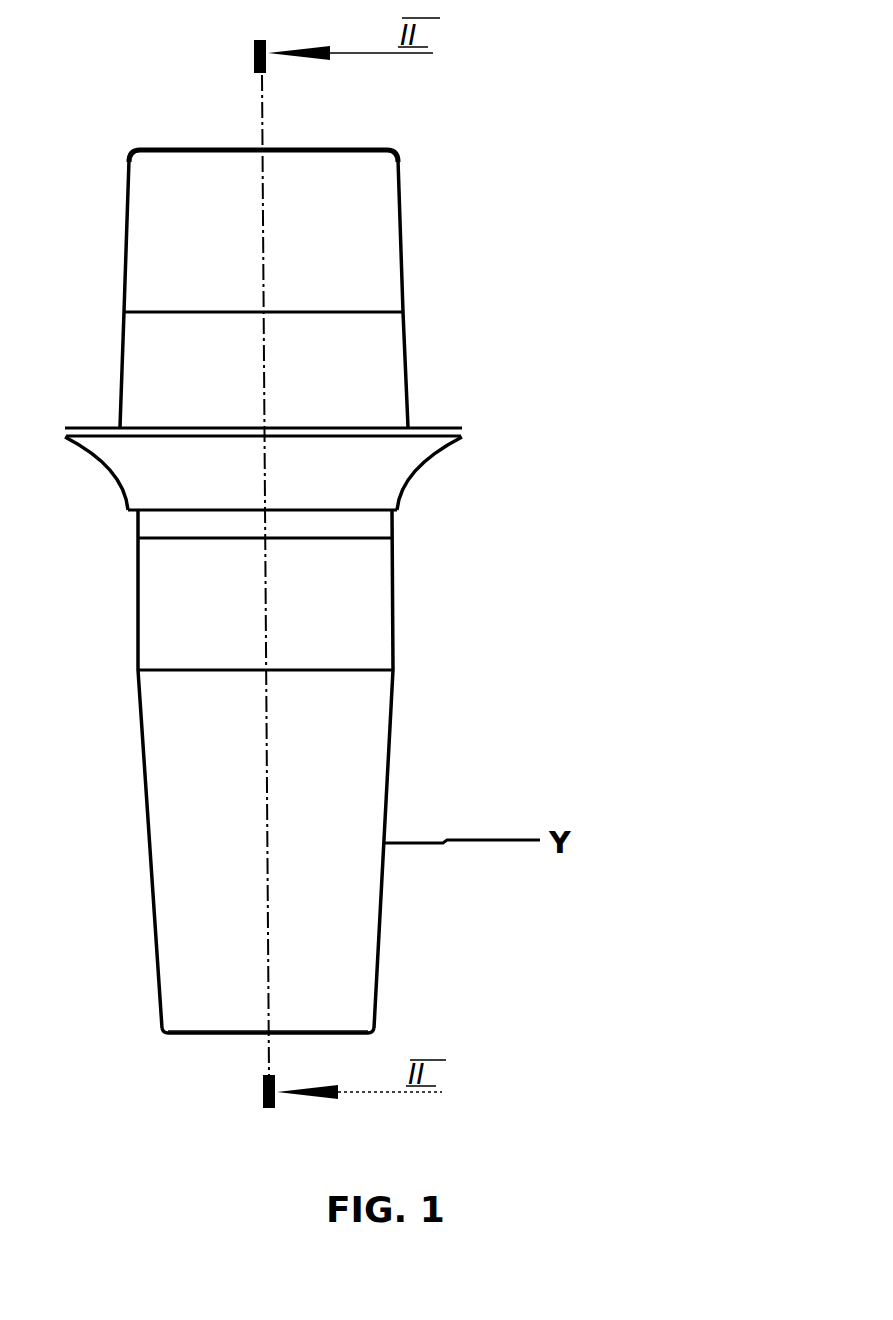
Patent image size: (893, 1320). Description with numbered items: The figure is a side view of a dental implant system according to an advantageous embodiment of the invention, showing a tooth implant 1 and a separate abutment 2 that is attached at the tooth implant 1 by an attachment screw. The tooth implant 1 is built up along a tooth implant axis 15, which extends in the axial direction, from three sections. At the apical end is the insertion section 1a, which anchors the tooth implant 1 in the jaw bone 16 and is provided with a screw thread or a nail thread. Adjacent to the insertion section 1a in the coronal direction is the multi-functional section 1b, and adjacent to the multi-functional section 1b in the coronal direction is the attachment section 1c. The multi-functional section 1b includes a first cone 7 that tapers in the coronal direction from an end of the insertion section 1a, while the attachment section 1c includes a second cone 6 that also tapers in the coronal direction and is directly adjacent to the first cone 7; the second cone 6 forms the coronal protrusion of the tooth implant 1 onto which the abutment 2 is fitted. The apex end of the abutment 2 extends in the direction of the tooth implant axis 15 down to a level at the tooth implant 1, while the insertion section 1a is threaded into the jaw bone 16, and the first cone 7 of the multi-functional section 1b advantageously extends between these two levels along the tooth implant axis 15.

The tooth implant 1 is at (358, 914).
The insertion section 1a is at (372, 762).
The multi-functional section 1b is at (167, 600).
The attachment section 1c is at (378, 378).
The abutment 2 is at (378, 237).
The second cone 6 is at (375, 525).
The first cone 7 is at (373, 602).
The tooth implant axis 15 is at (260, 117).
The jaw bone 16 is at (86, 876).